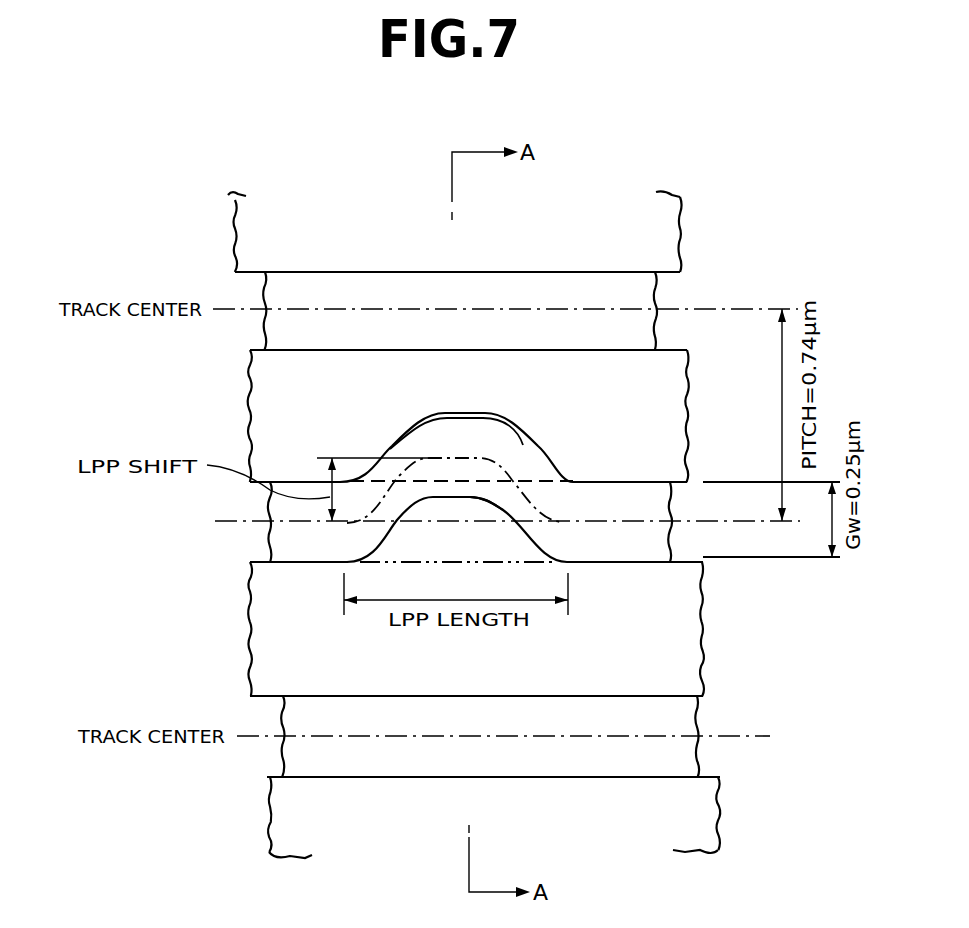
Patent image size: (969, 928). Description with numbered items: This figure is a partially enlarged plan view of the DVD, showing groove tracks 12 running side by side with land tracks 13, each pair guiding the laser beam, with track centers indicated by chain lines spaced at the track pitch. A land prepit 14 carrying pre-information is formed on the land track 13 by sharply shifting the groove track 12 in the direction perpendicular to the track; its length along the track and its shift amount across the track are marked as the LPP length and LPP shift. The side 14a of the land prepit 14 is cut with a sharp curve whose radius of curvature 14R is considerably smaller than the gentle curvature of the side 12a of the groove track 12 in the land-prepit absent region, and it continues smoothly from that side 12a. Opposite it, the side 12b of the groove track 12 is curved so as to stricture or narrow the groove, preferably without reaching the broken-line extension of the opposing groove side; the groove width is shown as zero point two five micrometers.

The groove track 12 is at (650, 294).
The side of groove track 12a is at (600, 488).
The side of groove track facing the land prepit 12b is at (507, 503).
The land track 13 is at (676, 231).
The land prepit 14 is at (467, 450).
The radius of curvature of land prepit 14R is at (458, 503).
The side of land prepit 14a is at (497, 437).